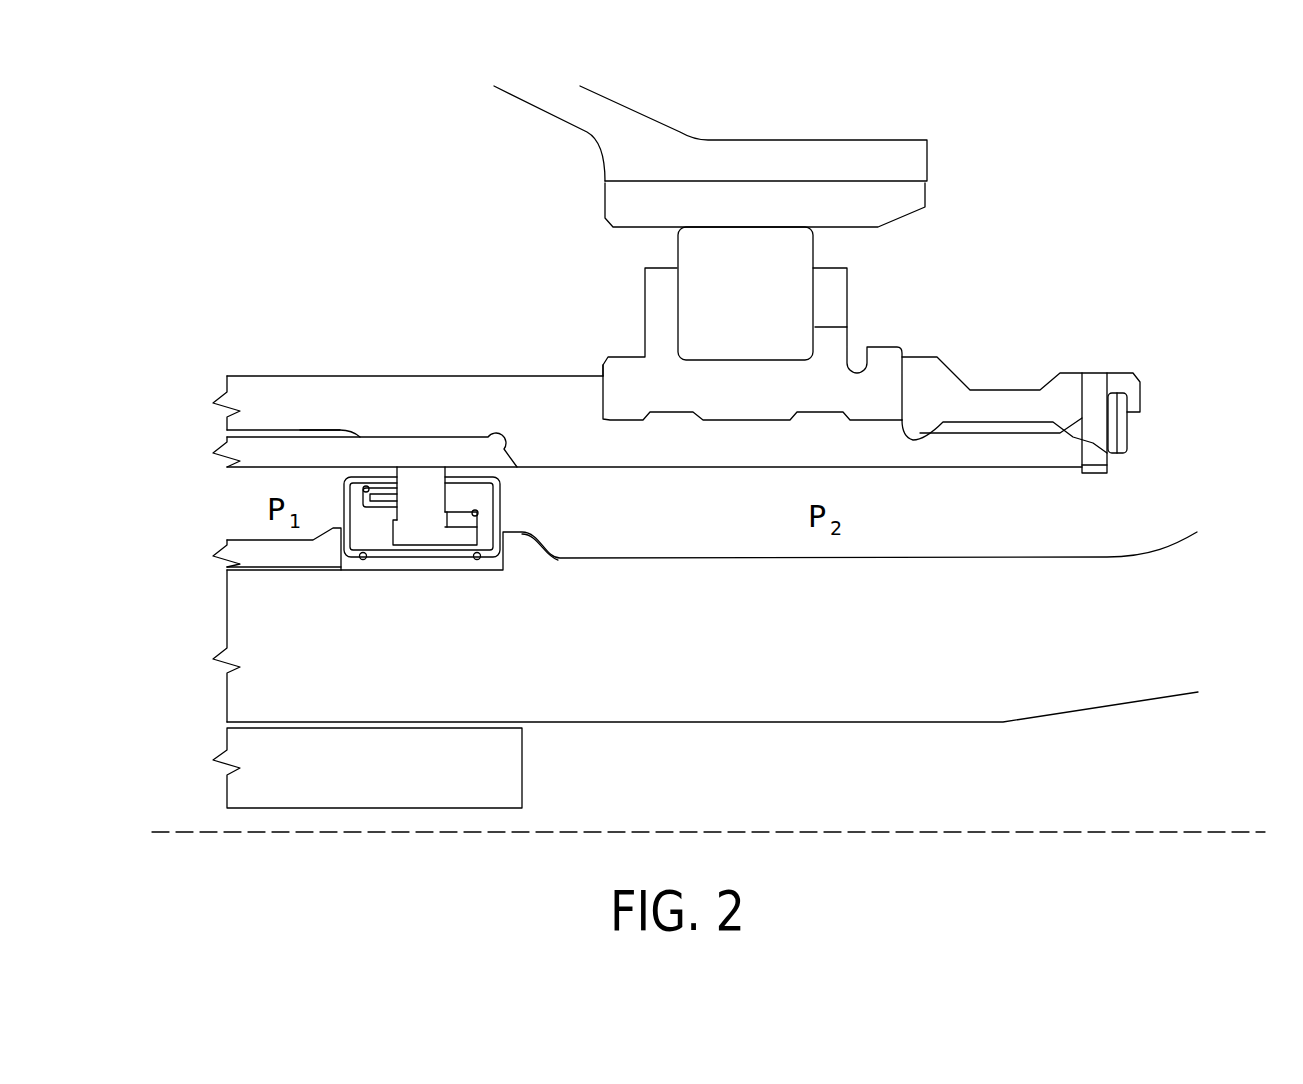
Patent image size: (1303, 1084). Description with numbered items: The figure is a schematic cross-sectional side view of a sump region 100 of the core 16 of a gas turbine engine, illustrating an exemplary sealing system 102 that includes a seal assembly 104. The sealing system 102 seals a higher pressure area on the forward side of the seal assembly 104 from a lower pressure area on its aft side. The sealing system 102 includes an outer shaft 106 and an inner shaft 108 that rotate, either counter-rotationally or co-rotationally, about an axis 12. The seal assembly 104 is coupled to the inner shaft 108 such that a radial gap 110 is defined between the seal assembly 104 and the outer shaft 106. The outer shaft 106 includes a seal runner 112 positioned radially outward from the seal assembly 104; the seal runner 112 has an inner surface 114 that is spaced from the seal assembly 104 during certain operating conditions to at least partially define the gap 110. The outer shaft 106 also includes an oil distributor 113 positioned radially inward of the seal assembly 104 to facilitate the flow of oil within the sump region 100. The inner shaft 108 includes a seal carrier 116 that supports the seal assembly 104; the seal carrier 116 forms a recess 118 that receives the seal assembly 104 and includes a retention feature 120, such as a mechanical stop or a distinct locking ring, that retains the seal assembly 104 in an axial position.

The axis 12 is at (180, 830).
The core 16 is at (1067, 152).
The sump region 100 is at (1023, 330).
The sealing system 102 is at (298, 160).
The seal assembly 104 is at (496, 587).
The outer shaft 106 is at (565, 422).
The inner shaft 108 is at (543, 637).
The radial gap 110 is at (423, 462).
The seal runner 112 is at (303, 447).
The oil distributor 113 is at (392, 788).
The inner surface 114 is at (236, 482).
The seal carrier 116 is at (277, 570).
The recess 118 is at (365, 580).
The retention feature 120 is at (515, 543).